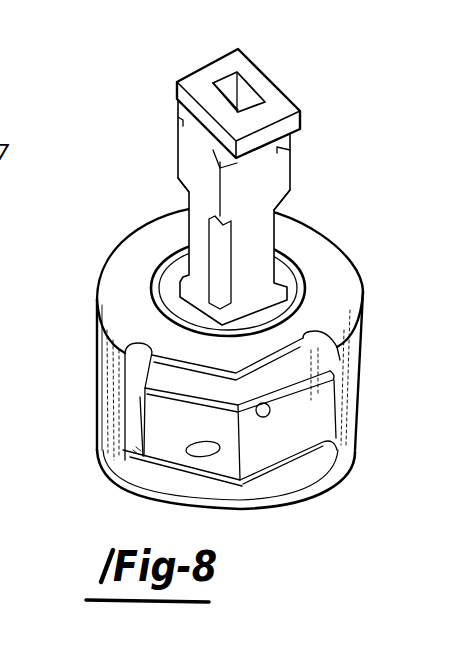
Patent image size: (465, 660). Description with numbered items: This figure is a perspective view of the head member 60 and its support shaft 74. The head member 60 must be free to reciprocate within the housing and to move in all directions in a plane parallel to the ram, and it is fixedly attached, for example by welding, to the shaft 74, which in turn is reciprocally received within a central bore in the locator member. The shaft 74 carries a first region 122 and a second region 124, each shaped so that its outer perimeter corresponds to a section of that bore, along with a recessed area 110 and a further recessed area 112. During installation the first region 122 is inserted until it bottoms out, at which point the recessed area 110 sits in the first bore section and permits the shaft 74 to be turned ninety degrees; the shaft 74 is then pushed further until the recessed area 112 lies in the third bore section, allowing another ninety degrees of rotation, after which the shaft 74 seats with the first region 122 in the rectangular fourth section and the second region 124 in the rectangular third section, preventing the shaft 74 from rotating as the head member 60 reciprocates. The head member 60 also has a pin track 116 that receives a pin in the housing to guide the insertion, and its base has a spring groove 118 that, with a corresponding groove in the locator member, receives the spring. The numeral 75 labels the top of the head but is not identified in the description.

The head member 60 is at (92, 367).
The shaft 74 is at (148, 151).
The head 75 is at (247, 88).
The recessed area 110 is at (178, 115).
The recessed area 112 is at (219, 264).
The pin track 116 is at (136, 433).
The spring groove 118 is at (165, 277).
The first region 122 is at (299, 128).
The second region 124 is at (180, 173).